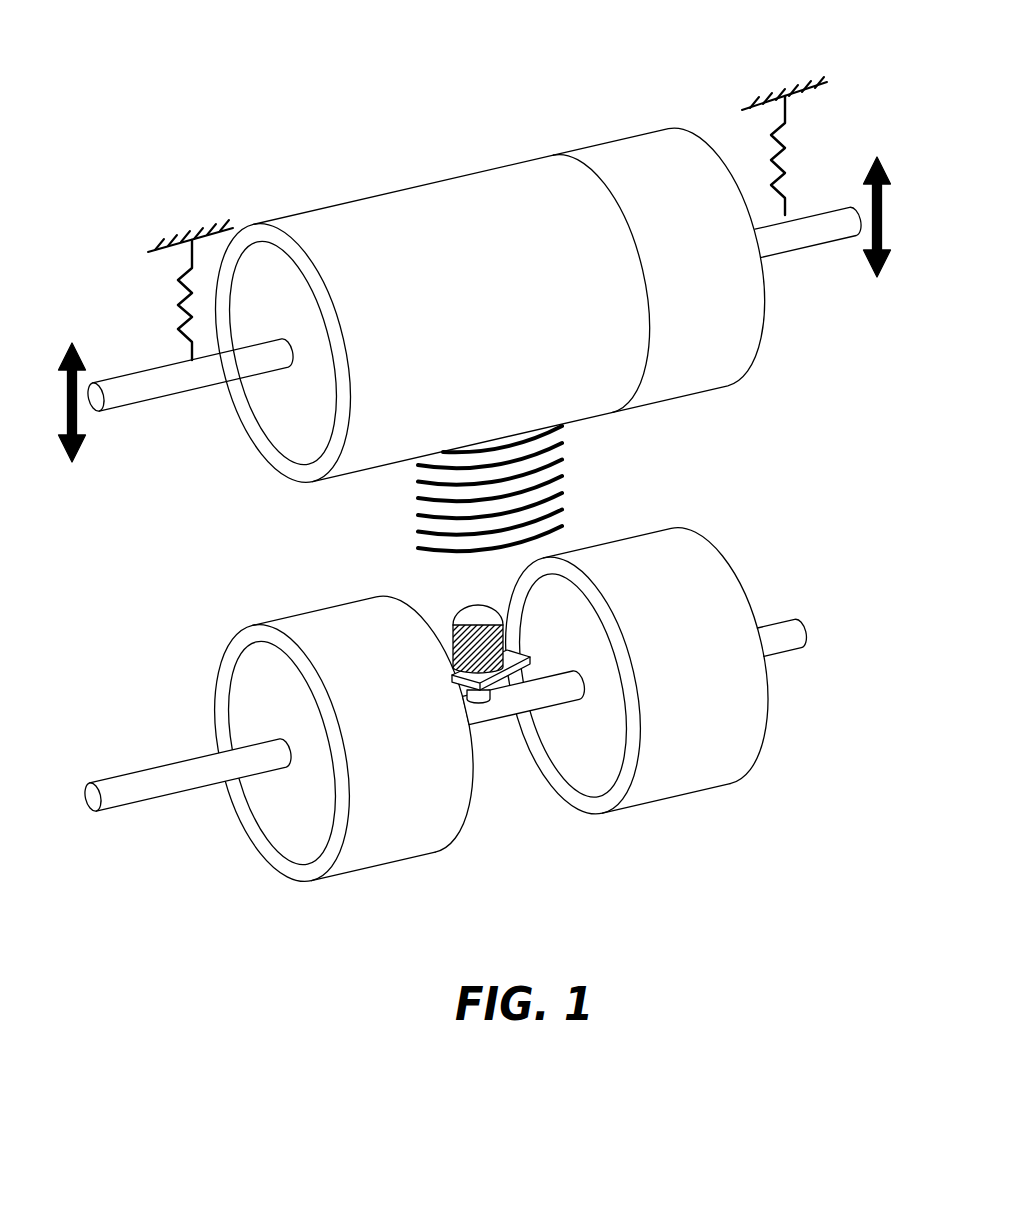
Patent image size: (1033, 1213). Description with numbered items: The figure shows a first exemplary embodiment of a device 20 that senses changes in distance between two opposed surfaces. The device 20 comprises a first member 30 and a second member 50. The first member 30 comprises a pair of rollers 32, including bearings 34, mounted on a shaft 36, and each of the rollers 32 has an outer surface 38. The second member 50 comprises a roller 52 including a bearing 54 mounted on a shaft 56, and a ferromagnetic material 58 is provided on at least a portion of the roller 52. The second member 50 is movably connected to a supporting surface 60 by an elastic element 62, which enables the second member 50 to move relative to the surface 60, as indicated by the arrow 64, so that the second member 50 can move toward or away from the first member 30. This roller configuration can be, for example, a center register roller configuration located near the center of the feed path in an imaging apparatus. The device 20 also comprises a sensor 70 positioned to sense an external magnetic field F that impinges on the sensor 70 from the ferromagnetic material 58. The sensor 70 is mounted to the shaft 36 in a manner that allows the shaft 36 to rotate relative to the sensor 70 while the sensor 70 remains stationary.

The device 20 is at (535, 93).
The first member 30 is at (788, 702).
The rollers 32 is at (480, 703).
The bearings 34 is at (277, 823).
The shaft 36 is at (167, 773).
The outer surface 38 is at (323, 622).
The second member 50 is at (792, 303).
The roller 52 is at (738, 355).
The bearing 54 is at (277, 420).
The shaft 56 is at (150, 377).
The ferromagnetic material 58 is at (452, 188).
The supporting surface 60 is at (197, 240).
The elastic element 62 is at (180, 282).
The arrow 64 is at (80, 447).
The sensor 70 is at (452, 622).
The external magnetic field F is at (564, 480).